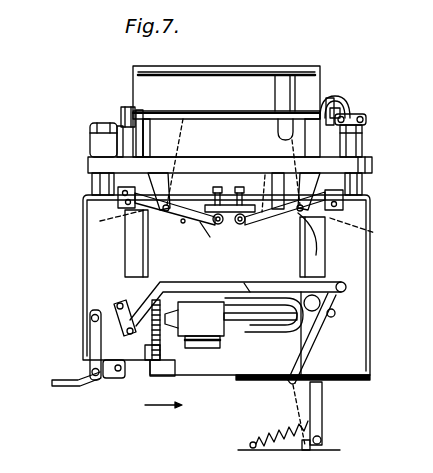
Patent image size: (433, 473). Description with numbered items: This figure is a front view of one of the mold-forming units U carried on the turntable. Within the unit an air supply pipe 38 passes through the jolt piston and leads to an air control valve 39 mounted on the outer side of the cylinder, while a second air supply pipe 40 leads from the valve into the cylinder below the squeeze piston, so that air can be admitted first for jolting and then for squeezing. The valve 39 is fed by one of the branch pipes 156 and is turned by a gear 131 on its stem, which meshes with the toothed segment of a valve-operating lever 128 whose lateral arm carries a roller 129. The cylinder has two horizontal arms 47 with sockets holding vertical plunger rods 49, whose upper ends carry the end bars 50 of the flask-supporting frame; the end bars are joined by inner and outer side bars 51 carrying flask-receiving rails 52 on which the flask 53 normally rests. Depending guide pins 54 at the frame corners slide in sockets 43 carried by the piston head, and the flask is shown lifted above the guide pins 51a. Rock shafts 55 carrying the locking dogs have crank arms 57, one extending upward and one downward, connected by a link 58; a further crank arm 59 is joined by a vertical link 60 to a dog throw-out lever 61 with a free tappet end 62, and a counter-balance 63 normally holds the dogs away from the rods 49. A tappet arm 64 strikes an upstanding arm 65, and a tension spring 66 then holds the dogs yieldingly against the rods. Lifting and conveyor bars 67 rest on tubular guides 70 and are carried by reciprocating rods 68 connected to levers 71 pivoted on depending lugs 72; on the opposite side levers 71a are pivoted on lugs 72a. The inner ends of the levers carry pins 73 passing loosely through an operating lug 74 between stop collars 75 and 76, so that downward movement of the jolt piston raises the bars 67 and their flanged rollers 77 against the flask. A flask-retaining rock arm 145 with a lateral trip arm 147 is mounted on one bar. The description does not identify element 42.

The mold-forming unit U is at (80, 128).
The air supply pipe 38 is at (248, 288).
The air control valve 39 is at (194, 325).
The air supply pipe 40 is at (226, 344).
The pivot pin 42 is at (183, 224).
The socket 43 is at (135, 255).
The horizontal extension arm 47 is at (90, 278).
The vertical plunger rod 49 is at (103, 186).
The end bar 50 is at (90, 160).
The side bar 51 is at (235, 155).
The guide pin 51a is at (292, 105).
The flask-receiving rail 52 is at (263, 117).
The flask member 53 is at (242, 80).
The depending guiding pin 54 is at (148, 180).
The horizontal rock shaft 55 is at (118, 306).
The crank arm 57 is at (96, 327).
The link 58 is at (246, 286).
The outwardly extending crank arm 59 is at (112, 308).
The vertical link 60 is at (90, 350).
The dog throw-out lever 61 is at (110, 378).
The tappet end 62 is at (63, 386).
The counter-balance 63 is at (300, 330).
The tappet arm 64 is at (323, 360).
The upstanding arm 65 is at (325, 418).
The tension spring 66 is at (284, 428).
The lifting and conveyor bar 67 is at (128, 110).
The vertically reciprocating rod 68 is at (121, 127).
The tubular guide 70 is at (150, 135).
The inwardly extending lever 71 is at (207, 222).
The lever 71a is at (133, 222).
The depending lug 72 is at (165, 200).
The depending lug 72a is at (222, 125).
The upwardly extending pin 73 is at (242, 187).
The operating lug 74 is at (227, 230).
The stop collar 75 is at (270, 186).
The stop collar 76 is at (210, 232).
The flanged roller 77 is at (142, 113).
The valve-operating lever 128 is at (157, 353).
The roller 129 is at (175, 375).
The gear 131 is at (165, 350).
The rock arm 145 is at (323, 93).
The trip arm 147 is at (355, 116).
The branch pipe 156 is at (243, 313).